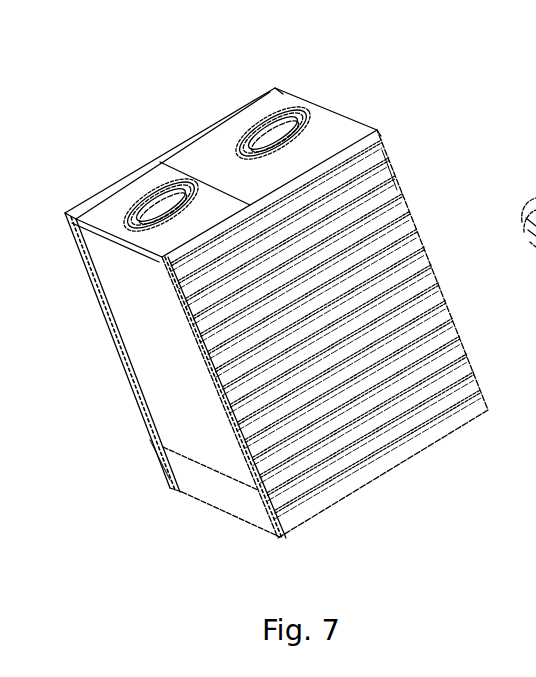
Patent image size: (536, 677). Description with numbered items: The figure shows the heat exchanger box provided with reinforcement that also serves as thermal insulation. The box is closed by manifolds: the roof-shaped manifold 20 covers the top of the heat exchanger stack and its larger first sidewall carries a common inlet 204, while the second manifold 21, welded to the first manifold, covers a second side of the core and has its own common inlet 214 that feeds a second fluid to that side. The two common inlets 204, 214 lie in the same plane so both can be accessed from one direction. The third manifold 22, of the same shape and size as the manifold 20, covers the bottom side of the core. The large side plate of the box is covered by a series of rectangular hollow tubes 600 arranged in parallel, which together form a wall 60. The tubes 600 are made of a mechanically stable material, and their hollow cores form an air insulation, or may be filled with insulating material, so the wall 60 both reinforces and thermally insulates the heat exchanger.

The manifold 20 is at (333, 127).
The common inlet 204 is at (267, 130).
The common inlet 214 is at (157, 197).
The second manifold 21 is at (133, 306).
The third manifold 22 is at (220, 497).
The wall of rectangular hollow tubes 60 is at (342, 293).
The rectangular hollow tubes 600 is at (383, 167).